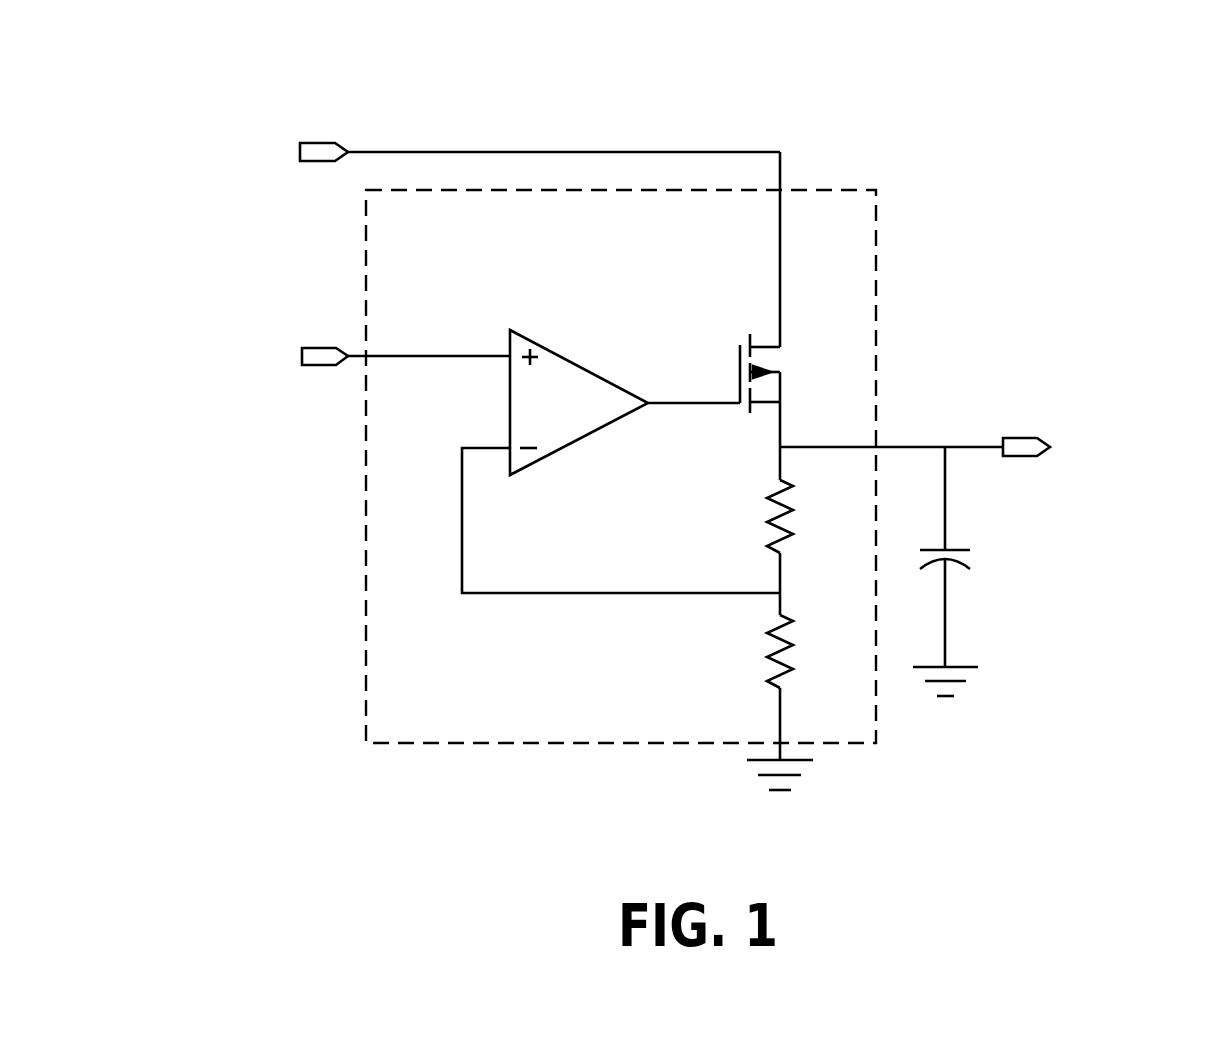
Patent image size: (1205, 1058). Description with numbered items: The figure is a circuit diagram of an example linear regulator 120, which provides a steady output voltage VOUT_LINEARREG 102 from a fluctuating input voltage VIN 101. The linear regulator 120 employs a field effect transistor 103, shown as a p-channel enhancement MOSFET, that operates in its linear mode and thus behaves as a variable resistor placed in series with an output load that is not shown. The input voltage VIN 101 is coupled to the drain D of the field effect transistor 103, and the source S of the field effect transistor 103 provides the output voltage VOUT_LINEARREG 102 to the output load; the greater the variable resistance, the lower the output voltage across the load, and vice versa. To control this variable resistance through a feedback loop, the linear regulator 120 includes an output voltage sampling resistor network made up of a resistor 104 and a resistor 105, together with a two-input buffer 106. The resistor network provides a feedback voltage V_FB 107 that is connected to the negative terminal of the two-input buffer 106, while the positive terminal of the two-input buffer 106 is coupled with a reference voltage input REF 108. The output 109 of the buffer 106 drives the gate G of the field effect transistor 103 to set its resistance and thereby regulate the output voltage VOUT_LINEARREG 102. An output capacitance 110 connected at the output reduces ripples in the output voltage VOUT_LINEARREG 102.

The linear regulator 120 is at (105, 106).
The input voltage VIN 101 is at (292, 186).
The reference voltage input REF 108 is at (292, 389).
The two-input buffer 106 is at (576, 414).
The output of the buffer 109 is at (657, 401).
The field effect transistor 103 is at (840, 382).
The output voltage VOUT_LINEARREG 102 is at (1108, 464).
The resistor 104 is at (753, 529).
The feedback voltage V_FB 107 is at (456, 476).
The resistor 105 is at (753, 670).
The output capacitance 110 is at (1036, 573).